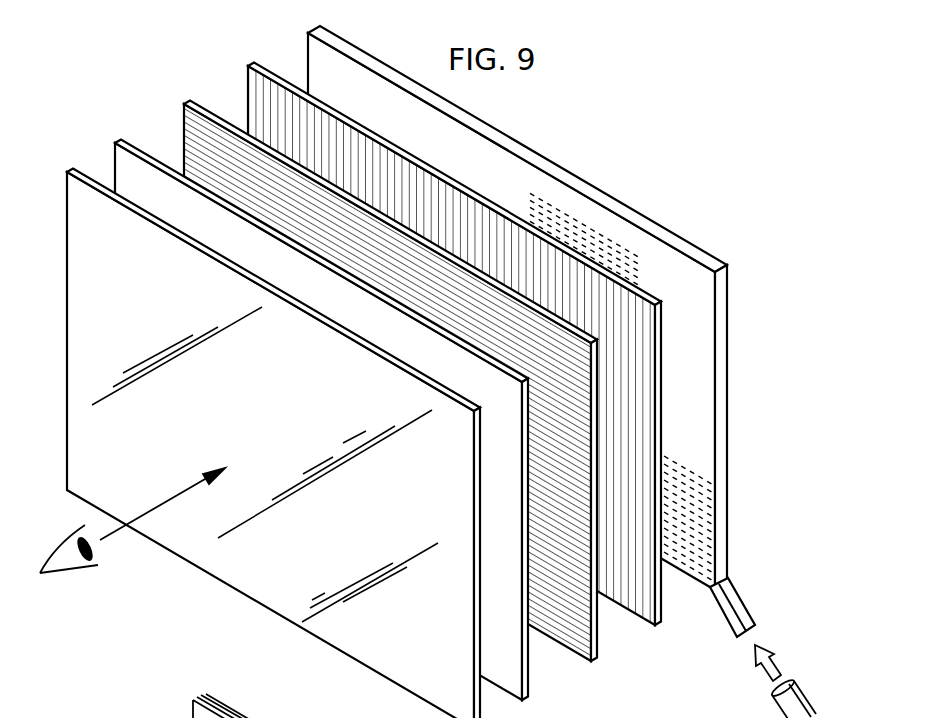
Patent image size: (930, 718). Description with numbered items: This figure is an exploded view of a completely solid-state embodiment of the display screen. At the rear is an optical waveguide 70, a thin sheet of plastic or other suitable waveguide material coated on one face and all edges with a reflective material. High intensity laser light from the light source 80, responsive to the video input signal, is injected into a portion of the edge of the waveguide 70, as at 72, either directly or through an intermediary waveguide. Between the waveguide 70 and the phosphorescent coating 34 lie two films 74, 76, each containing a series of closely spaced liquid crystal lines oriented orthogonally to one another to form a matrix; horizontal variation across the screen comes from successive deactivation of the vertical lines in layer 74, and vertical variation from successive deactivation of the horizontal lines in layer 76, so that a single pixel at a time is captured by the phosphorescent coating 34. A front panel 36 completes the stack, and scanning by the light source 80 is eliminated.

The optical waveguide 70 is at (700, 362).
The edge portion of the waveguide 72 is at (739, 600).
The film of vertical liquid crystal lines 74 is at (660, 617).
The film of horizontal liquid crystal lines 76 is at (580, 644).
The phosphorescent coating 34 is at (510, 679).
The front transparent panel 36 is at (447, 689).
The light source 80 is at (770, 700).